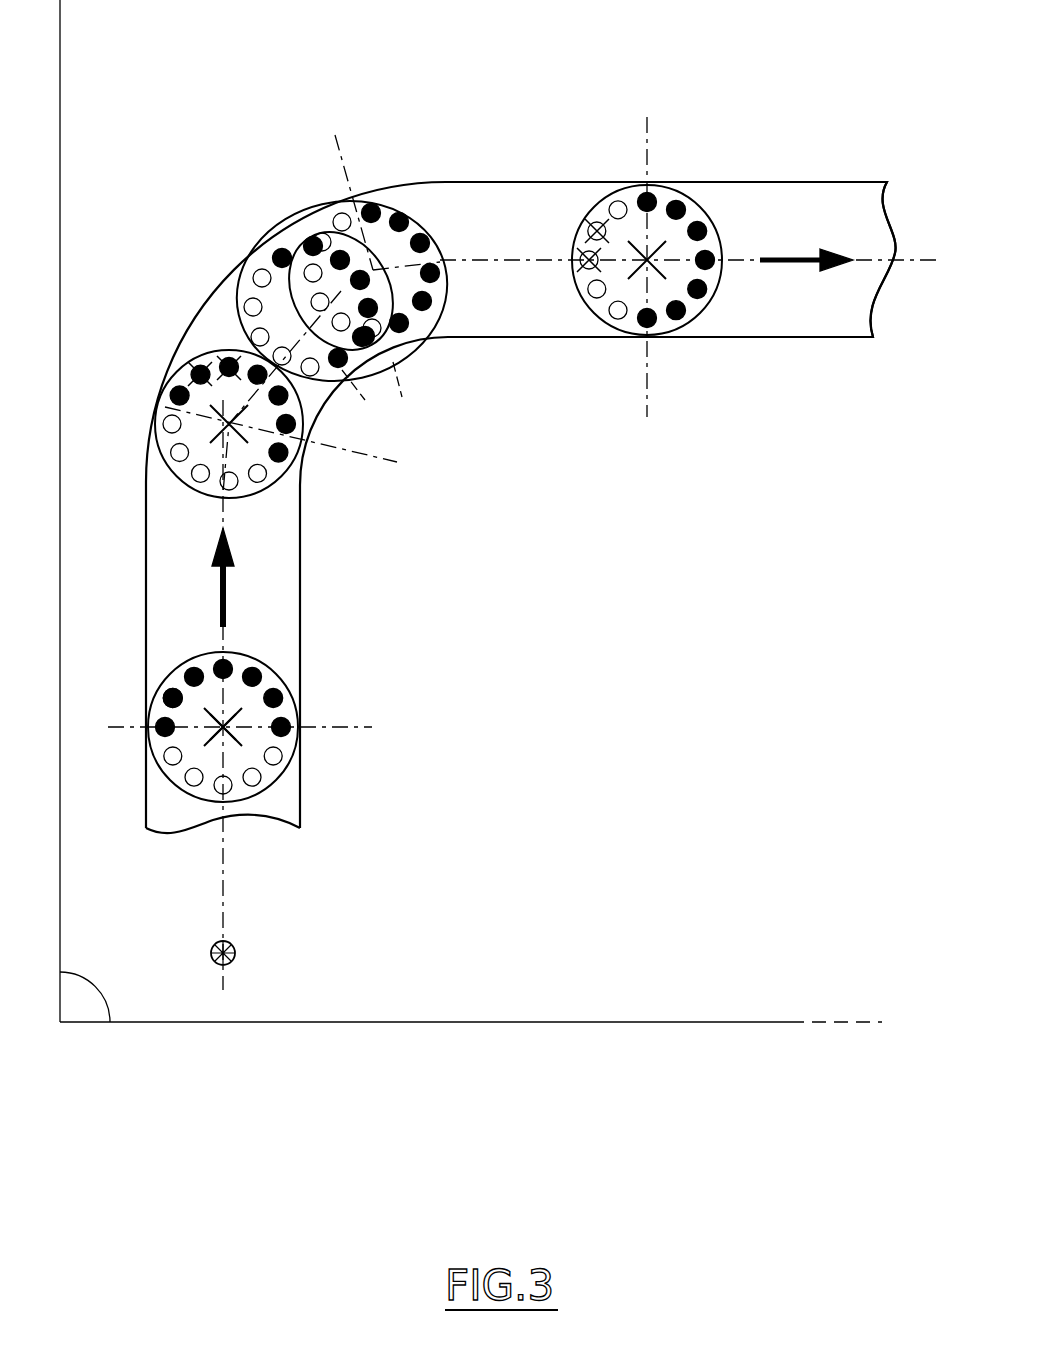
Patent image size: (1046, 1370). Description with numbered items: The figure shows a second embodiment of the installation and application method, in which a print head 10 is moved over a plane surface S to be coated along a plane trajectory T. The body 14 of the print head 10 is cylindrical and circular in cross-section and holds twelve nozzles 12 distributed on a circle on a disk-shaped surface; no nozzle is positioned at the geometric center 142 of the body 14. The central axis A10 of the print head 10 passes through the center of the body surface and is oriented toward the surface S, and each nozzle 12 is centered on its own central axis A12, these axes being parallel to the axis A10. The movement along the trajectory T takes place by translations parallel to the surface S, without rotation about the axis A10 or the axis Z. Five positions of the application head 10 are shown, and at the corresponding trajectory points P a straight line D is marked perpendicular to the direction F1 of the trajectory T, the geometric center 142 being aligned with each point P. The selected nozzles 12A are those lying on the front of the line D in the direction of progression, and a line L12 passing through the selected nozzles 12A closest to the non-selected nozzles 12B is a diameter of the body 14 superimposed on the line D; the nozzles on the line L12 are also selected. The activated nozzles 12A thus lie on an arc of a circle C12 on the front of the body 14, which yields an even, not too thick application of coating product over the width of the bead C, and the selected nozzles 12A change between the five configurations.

The print head 10 is at (224, 275).
The nozzles 12 is at (384, 612).
The selected nozzles 12A is at (297, 423).
The non-selected nozzles 12B is at (200, 475).
The body 14 is at (262, 803).
The geometric center 142 is at (217, 735).
The central axis A10 is at (643, 250).
The nozzle central axis A12 is at (226, 361).
The arc of a circle C12 is at (170, 685).
The bead C is at (288, 558).
The straight line D is at (168, 391).
The trajectory point P is at (228, 427).
The axis Z is at (236, 950).
The surface to be coated S is at (85, 997).
The trajectory T is at (933, 257).
The direction of trajectory F1 is at (532, 423).
The delimiting line L12 is at (303, 470).